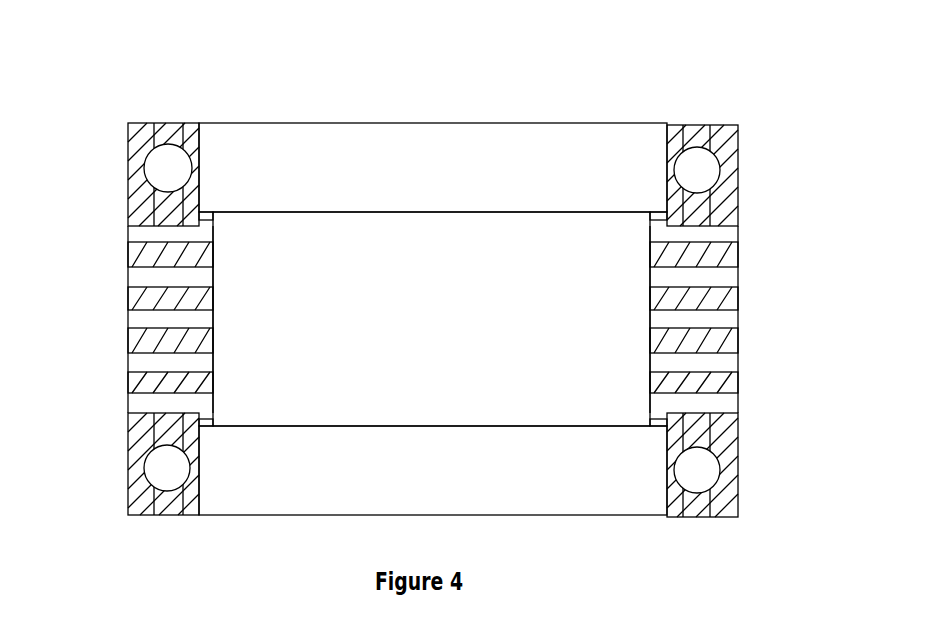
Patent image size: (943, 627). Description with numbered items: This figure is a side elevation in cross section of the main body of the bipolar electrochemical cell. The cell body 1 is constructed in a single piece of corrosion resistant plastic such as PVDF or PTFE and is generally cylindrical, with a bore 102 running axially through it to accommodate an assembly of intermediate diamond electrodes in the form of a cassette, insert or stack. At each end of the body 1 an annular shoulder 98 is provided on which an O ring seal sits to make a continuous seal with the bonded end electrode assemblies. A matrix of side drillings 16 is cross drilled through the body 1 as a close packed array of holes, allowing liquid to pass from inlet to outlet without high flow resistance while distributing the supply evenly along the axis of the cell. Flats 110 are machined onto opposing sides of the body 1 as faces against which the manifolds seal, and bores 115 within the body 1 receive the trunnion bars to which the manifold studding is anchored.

The cell body 1 is at (437, 261).
The side drillings 16 is at (128, 330).
The annular shoulder 98 is at (217, 190).
The bore 102 is at (218, 252).
The flats 110 is at (128, 262).
The bores 115 is at (190, 172).